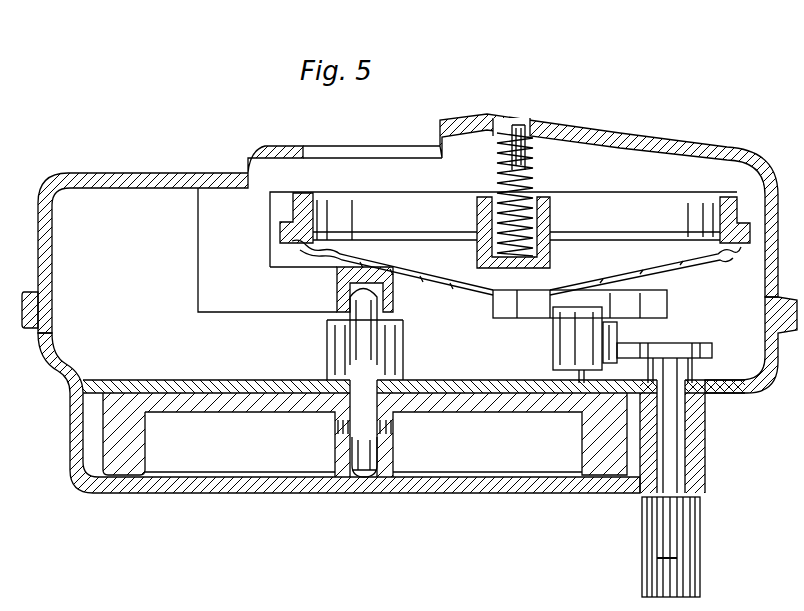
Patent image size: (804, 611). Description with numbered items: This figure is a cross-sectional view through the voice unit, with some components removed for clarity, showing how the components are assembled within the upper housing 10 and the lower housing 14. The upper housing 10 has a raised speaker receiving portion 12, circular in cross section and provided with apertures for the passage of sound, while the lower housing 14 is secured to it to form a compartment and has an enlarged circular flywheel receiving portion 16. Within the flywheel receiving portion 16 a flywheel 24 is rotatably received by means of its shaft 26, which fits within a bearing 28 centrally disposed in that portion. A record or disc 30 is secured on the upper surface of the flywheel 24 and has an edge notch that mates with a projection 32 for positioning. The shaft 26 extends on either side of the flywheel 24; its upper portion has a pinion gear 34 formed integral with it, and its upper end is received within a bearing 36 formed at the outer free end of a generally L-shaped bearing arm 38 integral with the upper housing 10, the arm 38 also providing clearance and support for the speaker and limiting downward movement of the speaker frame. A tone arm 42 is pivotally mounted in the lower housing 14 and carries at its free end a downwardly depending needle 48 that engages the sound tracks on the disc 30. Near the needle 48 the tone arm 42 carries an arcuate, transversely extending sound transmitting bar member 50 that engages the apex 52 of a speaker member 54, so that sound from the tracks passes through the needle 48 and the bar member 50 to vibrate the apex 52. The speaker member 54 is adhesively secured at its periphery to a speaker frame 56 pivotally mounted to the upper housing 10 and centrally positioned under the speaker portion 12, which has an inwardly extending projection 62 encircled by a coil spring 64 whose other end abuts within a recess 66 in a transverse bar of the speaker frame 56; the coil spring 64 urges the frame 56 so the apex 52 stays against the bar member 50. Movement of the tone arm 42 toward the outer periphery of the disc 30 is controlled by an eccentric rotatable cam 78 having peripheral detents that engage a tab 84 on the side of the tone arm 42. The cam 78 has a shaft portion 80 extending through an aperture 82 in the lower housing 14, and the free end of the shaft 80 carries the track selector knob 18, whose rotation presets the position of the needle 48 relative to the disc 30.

The upper housing 10 is at (409, 253).
The raised speaker receiving portion 12 is at (733, 148).
The lower housing 14 is at (748, 401).
The flywheel receiving portion 16 is at (72, 438).
The track selector knob 18 is at (660, 542).
The flywheel 24 is at (110, 443).
The shaft 26 is at (363, 453).
The bearing 28 is at (413, 468).
The record or disc 30 is at (160, 378).
The projection 32 is at (587, 423).
The pinion gear 34 is at (327, 348).
The bearing 36 is at (393, 300).
The bearing arm 38 is at (198, 298).
The tone arm 42 is at (547, 337).
The needle 48 is at (577, 376).
The sound transmitting bar member 50 is at (498, 312).
The apex 52 is at (493, 293).
The speaker member 54 is at (380, 252).
The speaker frame 56 is at (300, 200).
The projection 62 is at (516, 146).
The coil spring 64 is at (523, 188).
The recess 66 is at (553, 210).
The eccentric rotatable cam 78 is at (653, 350).
The shaft portion 80 is at (667, 474).
The aperture 82 is at (673, 452).
The tab 84 is at (617, 332).